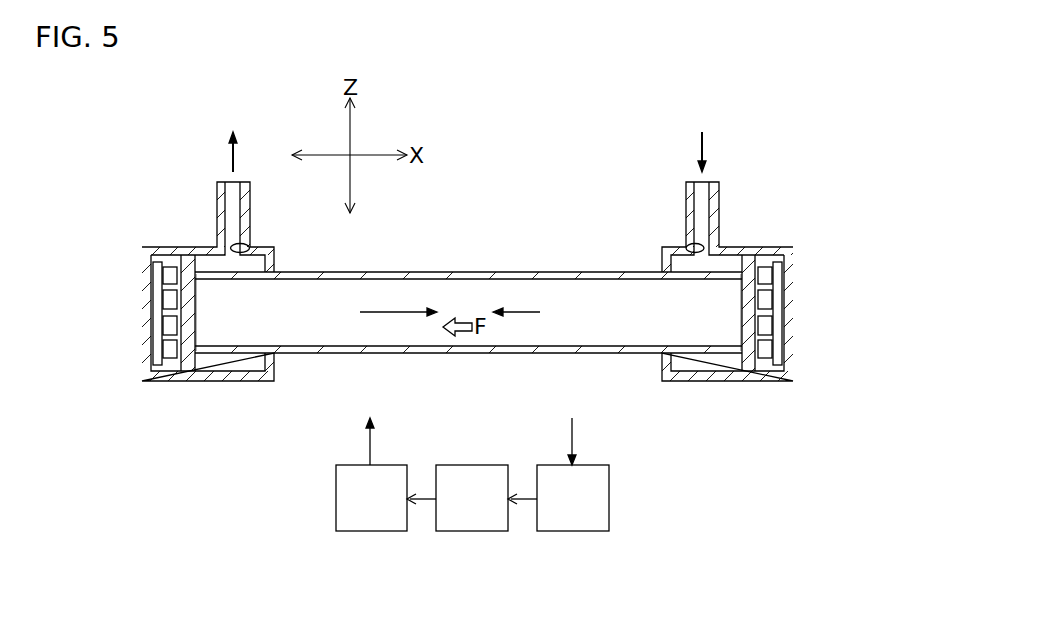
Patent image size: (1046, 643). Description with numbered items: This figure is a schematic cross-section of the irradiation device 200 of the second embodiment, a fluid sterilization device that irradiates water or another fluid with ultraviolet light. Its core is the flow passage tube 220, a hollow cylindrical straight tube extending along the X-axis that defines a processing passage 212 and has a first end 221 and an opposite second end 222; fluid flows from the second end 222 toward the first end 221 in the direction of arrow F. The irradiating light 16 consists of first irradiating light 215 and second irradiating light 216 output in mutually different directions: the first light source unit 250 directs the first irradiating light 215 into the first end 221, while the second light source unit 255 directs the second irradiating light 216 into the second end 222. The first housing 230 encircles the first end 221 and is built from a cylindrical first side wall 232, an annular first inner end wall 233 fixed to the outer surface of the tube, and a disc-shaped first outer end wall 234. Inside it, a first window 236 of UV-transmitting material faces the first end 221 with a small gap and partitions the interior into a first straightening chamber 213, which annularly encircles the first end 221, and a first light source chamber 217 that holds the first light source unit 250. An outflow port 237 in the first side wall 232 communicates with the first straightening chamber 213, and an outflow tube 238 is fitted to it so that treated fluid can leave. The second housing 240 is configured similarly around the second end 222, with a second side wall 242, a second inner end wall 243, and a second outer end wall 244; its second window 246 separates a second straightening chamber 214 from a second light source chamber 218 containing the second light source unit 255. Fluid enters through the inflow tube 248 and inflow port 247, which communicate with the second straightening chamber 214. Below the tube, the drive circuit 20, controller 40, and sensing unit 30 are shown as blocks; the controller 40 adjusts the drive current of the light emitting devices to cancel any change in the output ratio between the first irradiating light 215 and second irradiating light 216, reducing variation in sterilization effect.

The irradiation device 200 is at (293, 515).
The drive circuit 20 is at (372, 532).
The controller 40 is at (475, 532).
The sensing unit 30 is at (578, 532).
The irradiating light 16 is at (508, 235).
The first irradiating light 215 is at (402, 310).
The second irradiating light 216 is at (513, 310).
The processing passage 212 is at (497, 336).
The flow passage tube 220 is at (422, 351).
The first end 221 is at (200, 353).
The second end 222 is at (730, 351).
The first housing 230 is at (144, 238).
The first side wall 232 is at (202, 250).
The first inner end wall 233 is at (268, 366).
The first outer end wall 234 is at (147, 270).
The first window 236 is at (188, 366).
The outflow port 237 is at (247, 247).
The outflow tube 238 is at (250, 196).
The first light source unit 250 is at (157, 310).
The first light source chamber 217 is at (172, 365).
The first straightening chamber 213 is at (238, 362).
The second housing 240 is at (793, 238).
The second side wall 242 is at (735, 250).
The second inner end wall 243 is at (662, 366).
The second outer end wall 244 is at (791, 272).
The second window 246 is at (747, 366).
The inflow port 247 is at (697, 246).
The inflow tube 248 is at (687, 196).
The second light source unit 255 is at (779, 308).
The second light source chamber 218 is at (768, 366).
The second straightening chamber 214 is at (697, 360).